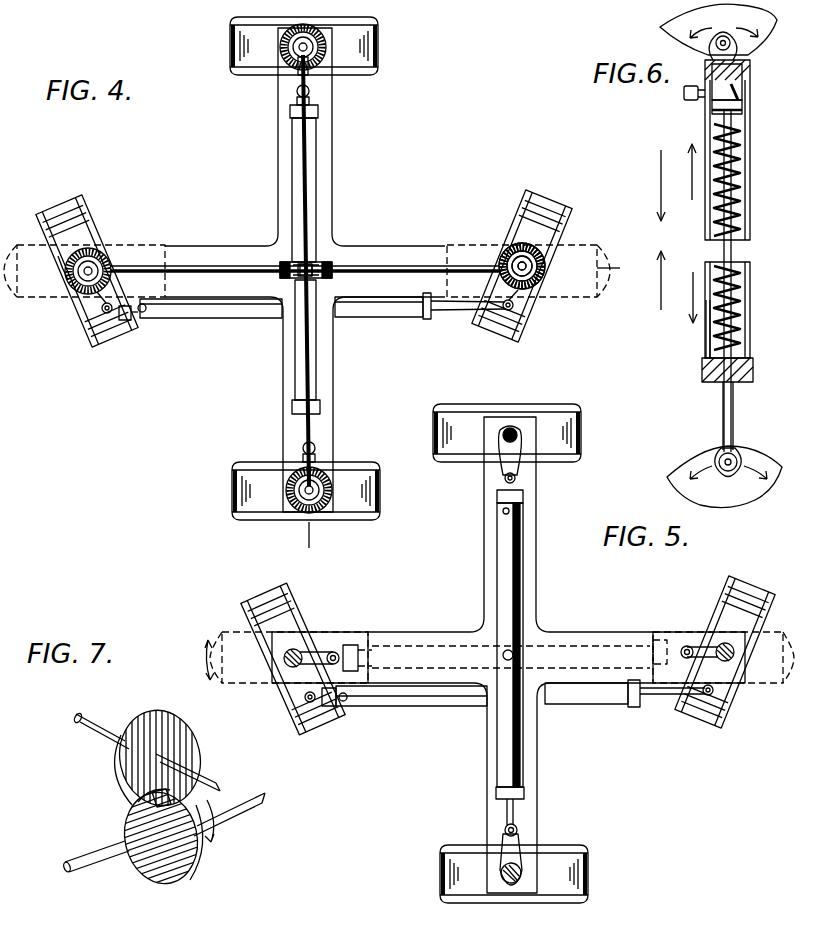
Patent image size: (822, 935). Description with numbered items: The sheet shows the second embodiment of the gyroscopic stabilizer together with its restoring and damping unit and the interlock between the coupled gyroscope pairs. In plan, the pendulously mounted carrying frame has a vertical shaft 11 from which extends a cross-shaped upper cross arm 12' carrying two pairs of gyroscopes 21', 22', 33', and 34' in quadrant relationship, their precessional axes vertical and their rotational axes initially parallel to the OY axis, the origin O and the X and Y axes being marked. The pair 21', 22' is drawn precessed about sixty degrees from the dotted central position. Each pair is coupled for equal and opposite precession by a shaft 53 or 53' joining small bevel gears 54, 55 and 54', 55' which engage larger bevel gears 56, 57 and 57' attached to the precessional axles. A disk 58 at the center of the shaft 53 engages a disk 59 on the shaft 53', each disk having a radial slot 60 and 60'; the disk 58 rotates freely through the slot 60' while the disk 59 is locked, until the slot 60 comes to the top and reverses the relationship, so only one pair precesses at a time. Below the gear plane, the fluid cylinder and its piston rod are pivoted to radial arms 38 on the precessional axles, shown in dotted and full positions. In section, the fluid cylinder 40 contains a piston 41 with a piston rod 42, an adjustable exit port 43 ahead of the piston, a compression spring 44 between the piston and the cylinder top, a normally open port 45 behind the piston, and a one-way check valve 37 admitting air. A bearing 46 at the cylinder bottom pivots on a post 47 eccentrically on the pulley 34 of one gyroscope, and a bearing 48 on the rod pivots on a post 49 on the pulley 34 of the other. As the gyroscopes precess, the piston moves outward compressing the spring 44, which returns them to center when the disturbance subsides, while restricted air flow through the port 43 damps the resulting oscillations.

In FIG. 5, the vertical shaft 11 is at (504, 655).
In FIG. 4, the upper cross arm 12' is at (307, 270).
In FIG. 5, the upper cross arm 12' is at (502, 655).
In FIG. 4, the gyroscope assembly 21' is at (87, 291).
In FIG. 5, the gyroscope assembly 21' is at (288, 648).
In FIG. 4, the gyroscope assembly 22' is at (522, 278).
In FIG. 5, the gyroscope assembly 22' is at (714, 646).
In FIG. 4, the gyroscope assembly 33' is at (325, 46).
In FIG. 5, the gyroscope assembly 33' is at (532, 432).
In FIG. 4, the gyroscope assembly 34' is at (329, 491).
In FIG. 5, the gyroscope assembly 34' is at (538, 874).
In FIG. 6, the pulley 34 is at (702, 255).
In FIG. 6, the one-way check valve 37 is at (740, 90).
In FIG. 4, the radial arms 38 is at (102, 312).
In FIG. 5, the radial arms 38 is at (502, 836).
In FIG. 6, the fluid cylinder 40 is at (748, 312).
In FIG. 6, the piston 41 is at (712, 112).
In FIG. 6, the piston rod 42 is at (732, 242).
In FIG. 6, the adjustable exit port 43 is at (684, 95).
In FIG. 6, the compression spring 44 is at (745, 338).
In FIG. 6, the normally open port 45 is at (712, 345).
In FIG. 6, the bearing 46 is at (716, 38).
In FIG. 6, the post 47 is at (733, 38).
In FIG. 6, the bearing 48 is at (730, 472).
In FIG. 6, the post 49 is at (726, 470).
In FIG. 4, the shaft 53 is at (305, 235).
In FIG. 7, the shaft 53 is at (163, 852).
In FIG. 4, the shaft 53' is at (278, 270).
In FIG. 7, the shaft 53' is at (137, 751).
In FIG. 4, the small bevel gear 54 is at (511, 244).
In FIG. 4, the small bevel gear 54' is at (339, 83).
In FIG. 4, the small bevel gear 55 is at (107, 246).
In FIG. 4, the small bevel gear 55' is at (344, 441).
In FIG. 4, the large bevel gear 56 is at (284, 66).
In FIG. 4, the large bevel gear 57 is at (38, 248).
In FIG. 4, the large bevel gear 57' is at (331, 508).
In FIG. 4, the disk 58 is at (320, 262).
In FIG. 7, the disk 58 is at (175, 872).
In FIG. 4, the disk 59 is at (283, 262).
In FIG. 7, the disk 59 is at (190, 738).
In FIG. 7, the radial slot 60 is at (237, 802).
In FIG. 7, the radial slot 60' is at (131, 807).
In FIG. 4, the origin of axes O is at (318, 268).
In FIG. 4, the X axis X is at (618, 271).
In FIG. 4, the Y axis Y is at (309, 547).